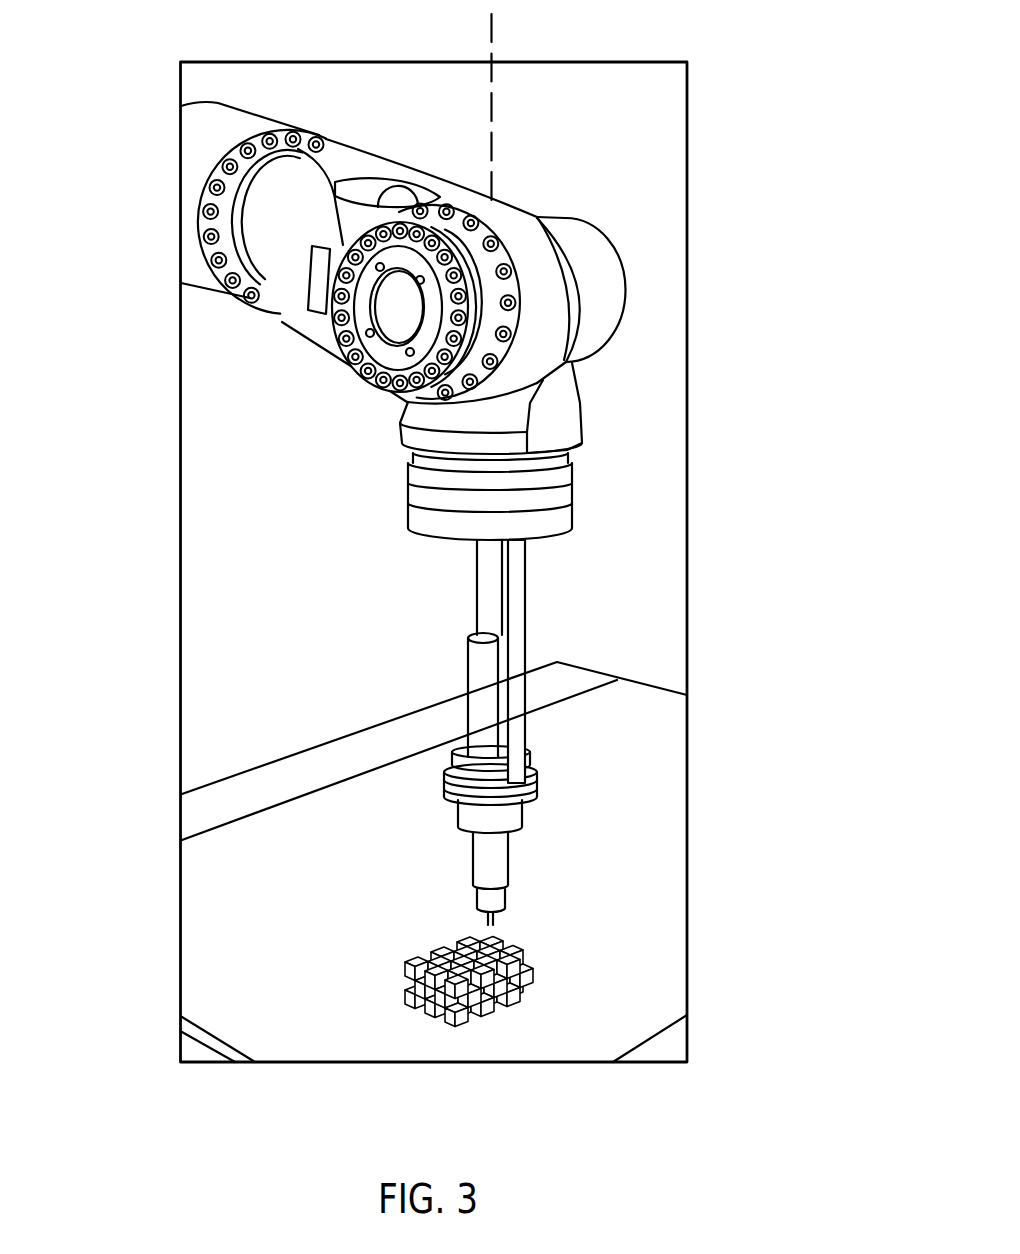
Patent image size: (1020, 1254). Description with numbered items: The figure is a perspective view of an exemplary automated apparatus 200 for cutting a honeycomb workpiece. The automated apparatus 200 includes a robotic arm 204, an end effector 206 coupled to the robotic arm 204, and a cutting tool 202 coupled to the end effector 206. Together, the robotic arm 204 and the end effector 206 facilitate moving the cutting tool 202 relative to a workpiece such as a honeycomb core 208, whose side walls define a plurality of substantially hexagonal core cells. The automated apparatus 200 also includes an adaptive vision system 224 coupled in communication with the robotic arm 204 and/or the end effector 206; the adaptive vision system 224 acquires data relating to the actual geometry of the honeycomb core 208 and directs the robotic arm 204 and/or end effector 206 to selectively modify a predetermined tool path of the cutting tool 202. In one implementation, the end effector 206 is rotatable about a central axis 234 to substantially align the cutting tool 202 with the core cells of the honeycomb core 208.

The automated apparatus 200 is at (634, 183).
The cutting tool 202 is at (526, 911).
The robotic arm 204 is at (206, 143).
The end effector 206 is at (540, 785).
The honeycomb core 208 is at (538, 973).
The adaptive vision system 224 is at (466, 722).
The central axis 234 is at (494, 30).